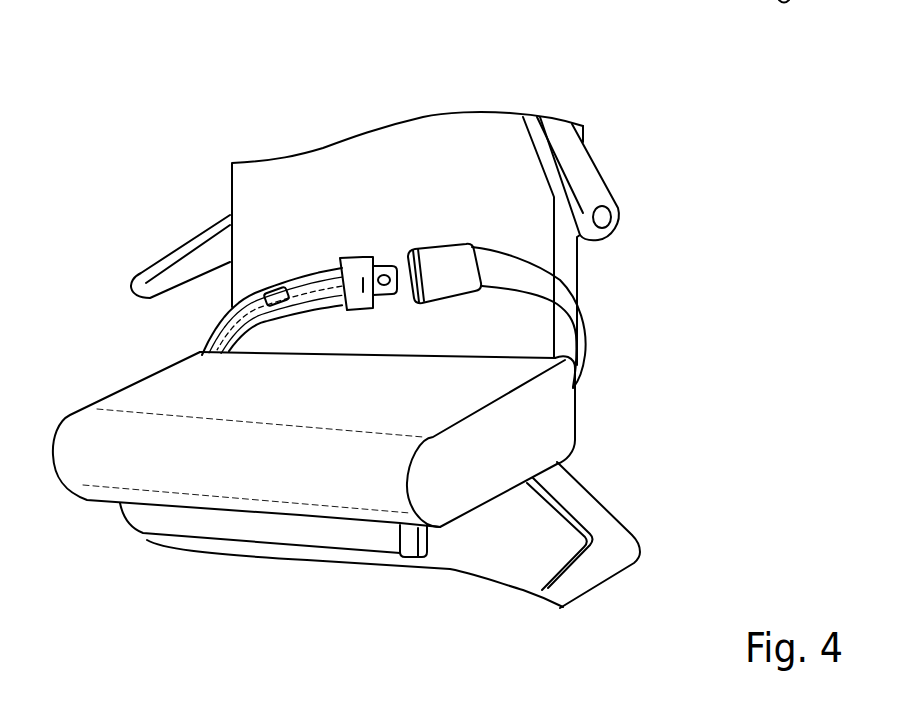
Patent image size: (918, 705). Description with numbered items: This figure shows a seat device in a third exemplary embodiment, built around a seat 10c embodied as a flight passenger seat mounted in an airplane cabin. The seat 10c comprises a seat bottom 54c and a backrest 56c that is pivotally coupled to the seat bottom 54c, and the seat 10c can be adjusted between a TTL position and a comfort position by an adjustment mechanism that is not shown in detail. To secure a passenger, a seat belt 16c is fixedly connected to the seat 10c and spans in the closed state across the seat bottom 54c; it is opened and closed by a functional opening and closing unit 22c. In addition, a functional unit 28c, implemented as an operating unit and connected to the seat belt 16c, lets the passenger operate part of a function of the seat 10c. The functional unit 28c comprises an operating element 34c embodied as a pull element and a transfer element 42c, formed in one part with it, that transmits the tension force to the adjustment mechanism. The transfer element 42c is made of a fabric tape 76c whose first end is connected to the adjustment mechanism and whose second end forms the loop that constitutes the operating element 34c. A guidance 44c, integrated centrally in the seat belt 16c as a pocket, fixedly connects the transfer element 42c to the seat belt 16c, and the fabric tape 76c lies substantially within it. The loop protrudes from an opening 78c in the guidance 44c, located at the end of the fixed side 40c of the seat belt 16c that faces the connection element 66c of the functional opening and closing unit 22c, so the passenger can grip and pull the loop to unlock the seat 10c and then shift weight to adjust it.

The seat 10c is at (369, 131).
The seat belt 16c is at (588, 337).
The functional opening and closing unit 22c is at (407, 245).
The functional unit 28c is at (275, 283).
The operating element 34c is at (275, 328).
The fixed side 40c is at (342, 257).
The transfer element 42c is at (227, 315).
The guidance 44c is at (213, 332).
The seat bottom 54c is at (483, 382).
The backrest 56c is at (479, 184).
The connection element 66c is at (363, 307).
The fabric tape 76c is at (270, 292).
The opening 78c is at (292, 327).